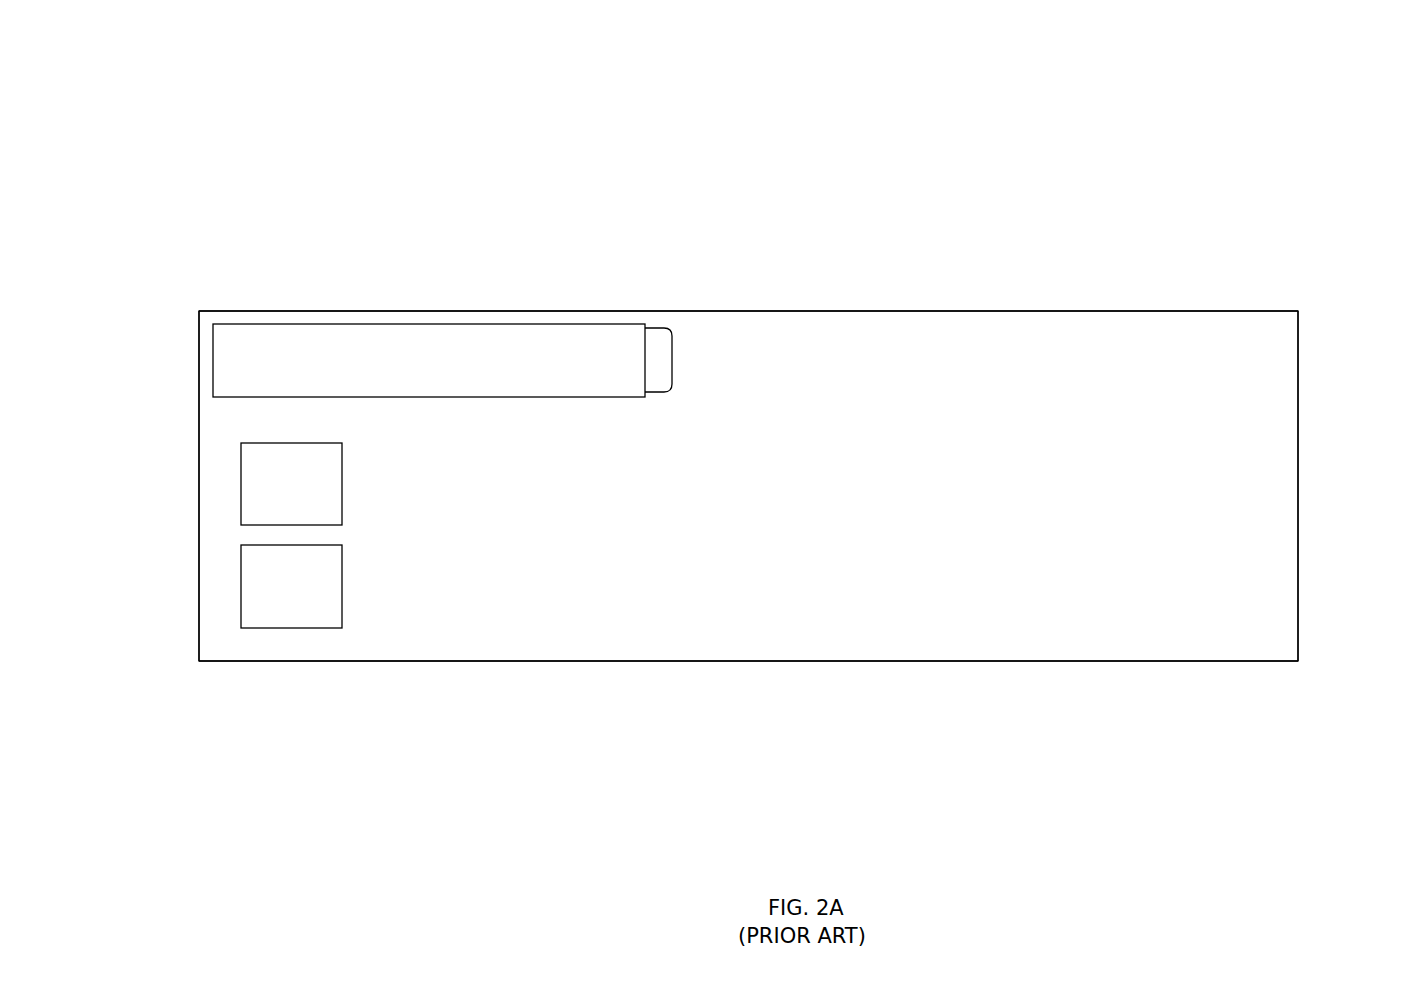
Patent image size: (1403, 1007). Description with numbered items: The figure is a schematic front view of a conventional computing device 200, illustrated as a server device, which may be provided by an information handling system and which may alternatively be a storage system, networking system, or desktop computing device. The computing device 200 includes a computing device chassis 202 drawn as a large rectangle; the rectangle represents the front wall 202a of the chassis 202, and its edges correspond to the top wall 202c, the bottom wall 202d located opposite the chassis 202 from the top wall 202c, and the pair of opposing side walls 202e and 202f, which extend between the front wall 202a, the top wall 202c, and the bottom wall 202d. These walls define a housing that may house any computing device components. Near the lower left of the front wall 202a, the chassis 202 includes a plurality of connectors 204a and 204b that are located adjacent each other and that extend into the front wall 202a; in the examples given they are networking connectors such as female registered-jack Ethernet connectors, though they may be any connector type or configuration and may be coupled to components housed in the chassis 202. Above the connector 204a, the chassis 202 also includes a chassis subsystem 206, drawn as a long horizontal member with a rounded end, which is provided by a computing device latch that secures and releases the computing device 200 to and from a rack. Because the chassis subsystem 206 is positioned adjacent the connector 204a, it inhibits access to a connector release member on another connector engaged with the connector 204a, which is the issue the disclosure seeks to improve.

The conventional computing device 200 is at (1252, 105).
The computing device chassis 202 is at (1302, 310).
The front wall 202a is at (1145, 442).
The top wall 202c is at (750, 311).
The bottom wall 202d is at (748, 661).
The side wall 202e is at (199, 487).
The side wall 202f is at (1298, 485).
The connector 204a is at (342, 482).
The connector 204b is at (342, 587).
The chassis subsystem 206 is at (430, 324).